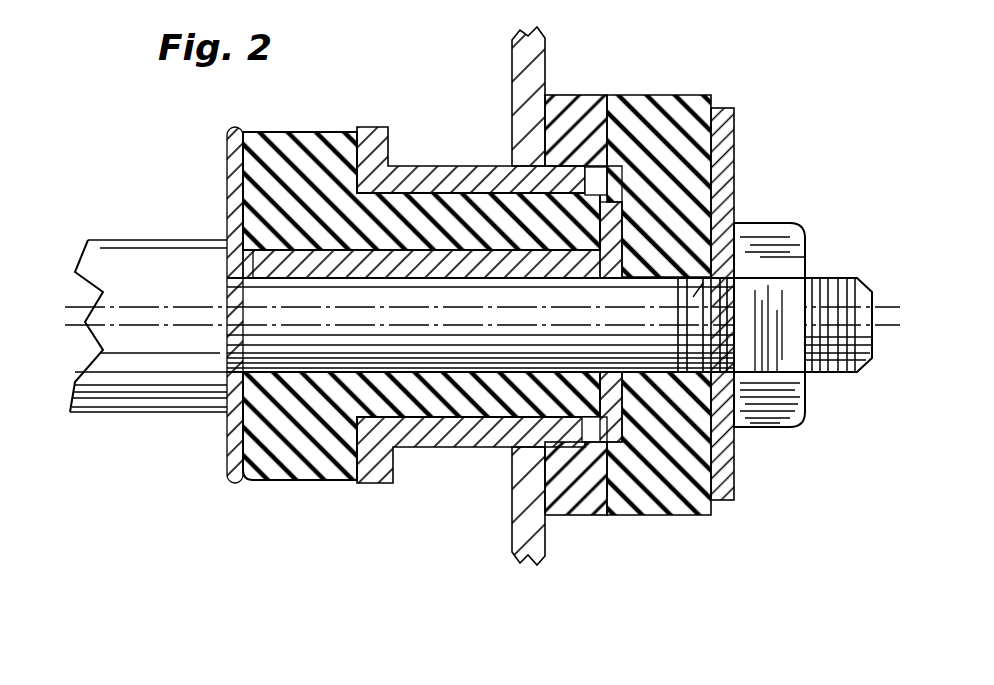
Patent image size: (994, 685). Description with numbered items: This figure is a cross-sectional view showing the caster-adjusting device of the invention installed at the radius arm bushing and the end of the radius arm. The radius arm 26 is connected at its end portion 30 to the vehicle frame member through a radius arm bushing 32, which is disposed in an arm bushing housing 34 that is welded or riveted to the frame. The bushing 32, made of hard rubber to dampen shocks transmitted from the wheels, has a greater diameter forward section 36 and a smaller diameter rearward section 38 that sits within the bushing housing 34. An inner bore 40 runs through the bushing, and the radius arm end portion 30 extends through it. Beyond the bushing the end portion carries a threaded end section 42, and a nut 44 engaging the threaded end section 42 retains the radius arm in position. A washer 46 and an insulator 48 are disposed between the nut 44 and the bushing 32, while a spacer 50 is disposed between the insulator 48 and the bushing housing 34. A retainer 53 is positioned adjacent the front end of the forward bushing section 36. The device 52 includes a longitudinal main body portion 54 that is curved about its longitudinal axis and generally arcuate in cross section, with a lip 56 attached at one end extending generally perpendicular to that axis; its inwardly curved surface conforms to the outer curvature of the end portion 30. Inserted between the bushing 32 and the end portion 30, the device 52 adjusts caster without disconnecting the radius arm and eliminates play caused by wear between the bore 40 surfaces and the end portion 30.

The radius arm 26 is at (127, 268).
The end portion 30 is at (232, 250).
The radius arm bushing 32 is at (316, 131).
The arm bushing housing 34 is at (459, 168).
The forward section 36 is at (300, 463).
The rearward section 38 is at (492, 400).
The inner bore 40 is at (437, 380).
The threaded end section 42 is at (734, 240).
The nut 44 is at (758, 405).
The washer 46 is at (723, 487).
The insulator 48 is at (648, 514).
The spacer 50 is at (567, 514).
The device 52 is at (612, 202).
The retainer 53 is at (227, 468).
The main body portion 54 is at (427, 262).
The lip 56 is at (624, 212).